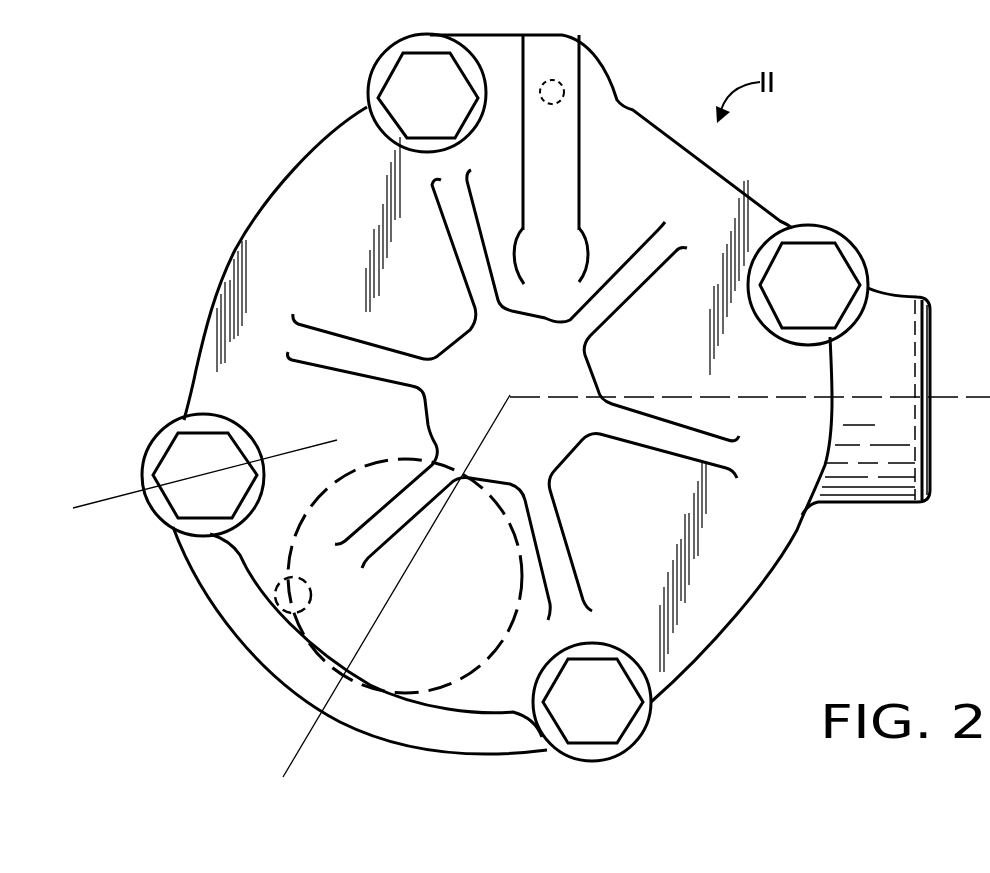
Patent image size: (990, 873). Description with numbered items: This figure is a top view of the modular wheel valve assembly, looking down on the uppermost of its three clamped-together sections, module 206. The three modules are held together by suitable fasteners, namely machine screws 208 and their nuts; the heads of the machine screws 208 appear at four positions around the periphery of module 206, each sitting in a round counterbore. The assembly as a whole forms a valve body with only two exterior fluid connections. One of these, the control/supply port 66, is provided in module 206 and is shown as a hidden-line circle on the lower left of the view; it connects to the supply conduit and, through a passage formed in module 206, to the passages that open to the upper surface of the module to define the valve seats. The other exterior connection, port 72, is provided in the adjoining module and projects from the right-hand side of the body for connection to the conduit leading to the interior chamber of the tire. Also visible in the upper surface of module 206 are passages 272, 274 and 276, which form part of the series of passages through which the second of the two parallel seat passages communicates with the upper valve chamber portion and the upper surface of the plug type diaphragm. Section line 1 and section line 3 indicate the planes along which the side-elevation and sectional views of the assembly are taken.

The module 206 is at (307, 192).
The machine screws 208 is at (407, 87).
The passage 272 is at (555, 92).
The passage 274 is at (555, 158).
The passage 276 is at (567, 265).
The port 72 is at (893, 365).
The port 66 is at (300, 618).
The section line 1 is at (233, 747).
The section line 3 is at (61, 458).